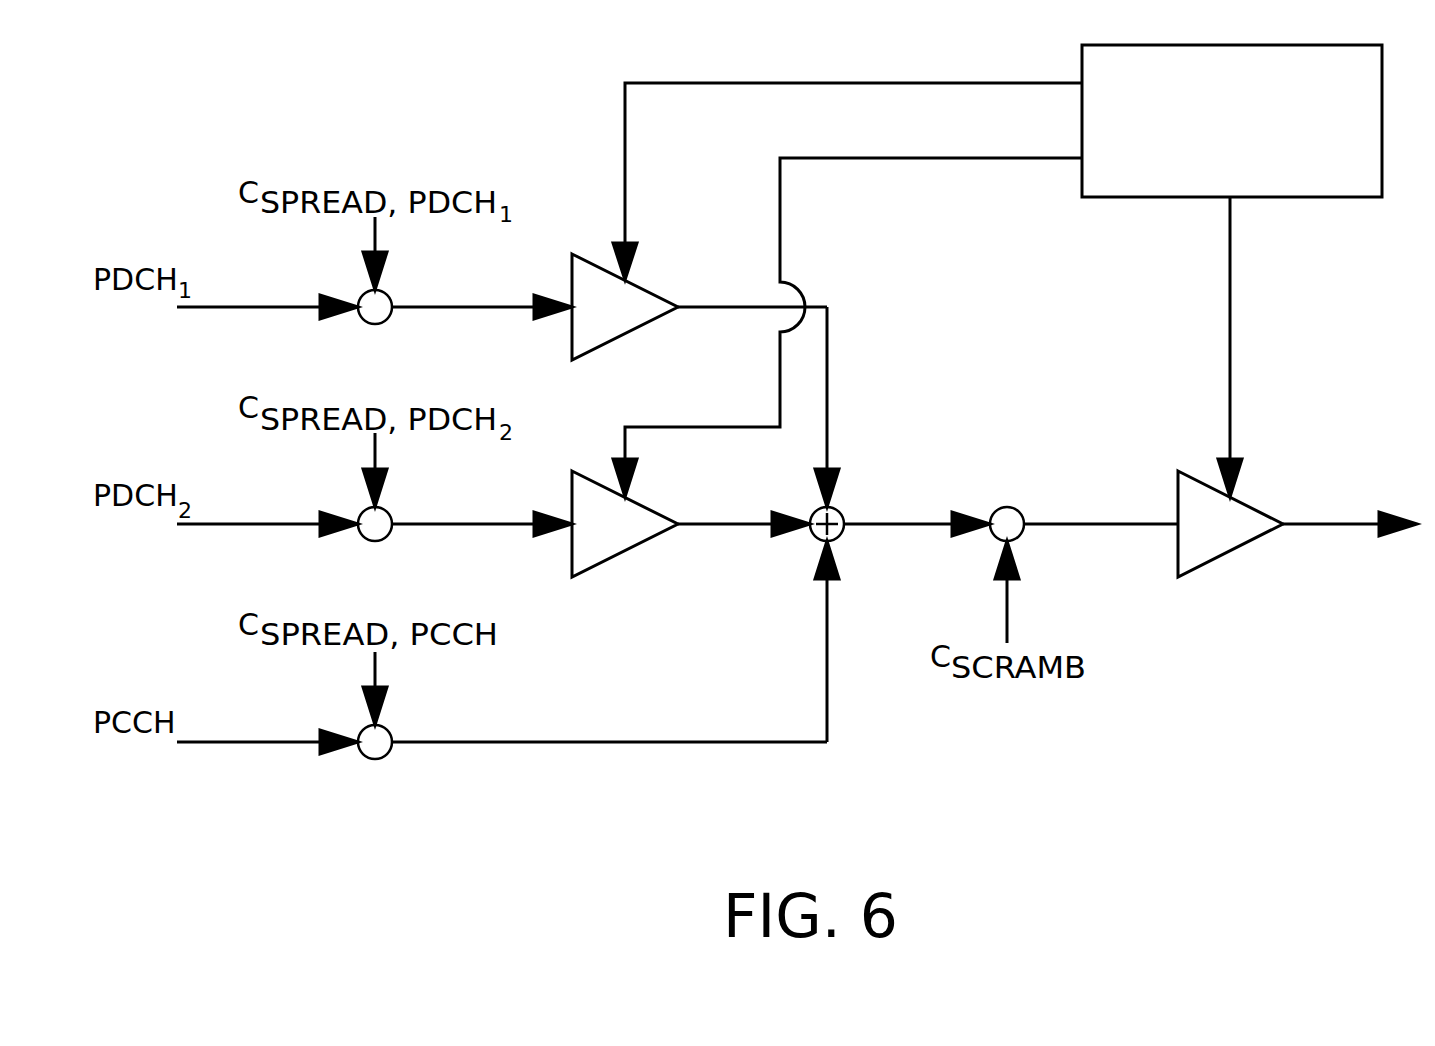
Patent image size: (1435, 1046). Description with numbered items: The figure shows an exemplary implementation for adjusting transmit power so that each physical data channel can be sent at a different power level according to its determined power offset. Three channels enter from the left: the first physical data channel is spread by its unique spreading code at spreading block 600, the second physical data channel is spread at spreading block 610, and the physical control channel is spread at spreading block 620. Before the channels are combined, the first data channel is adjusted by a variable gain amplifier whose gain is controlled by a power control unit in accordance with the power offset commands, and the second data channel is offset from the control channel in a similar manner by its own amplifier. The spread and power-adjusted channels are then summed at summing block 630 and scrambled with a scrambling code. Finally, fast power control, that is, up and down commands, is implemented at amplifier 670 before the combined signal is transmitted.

The spreading block 600 is at (372, 324).
The spreading block 610 is at (372, 541).
The spreading block 620 is at (372, 759).
The summing block 630 is at (842, 510).
The amplifier 670 is at (1263, 513).